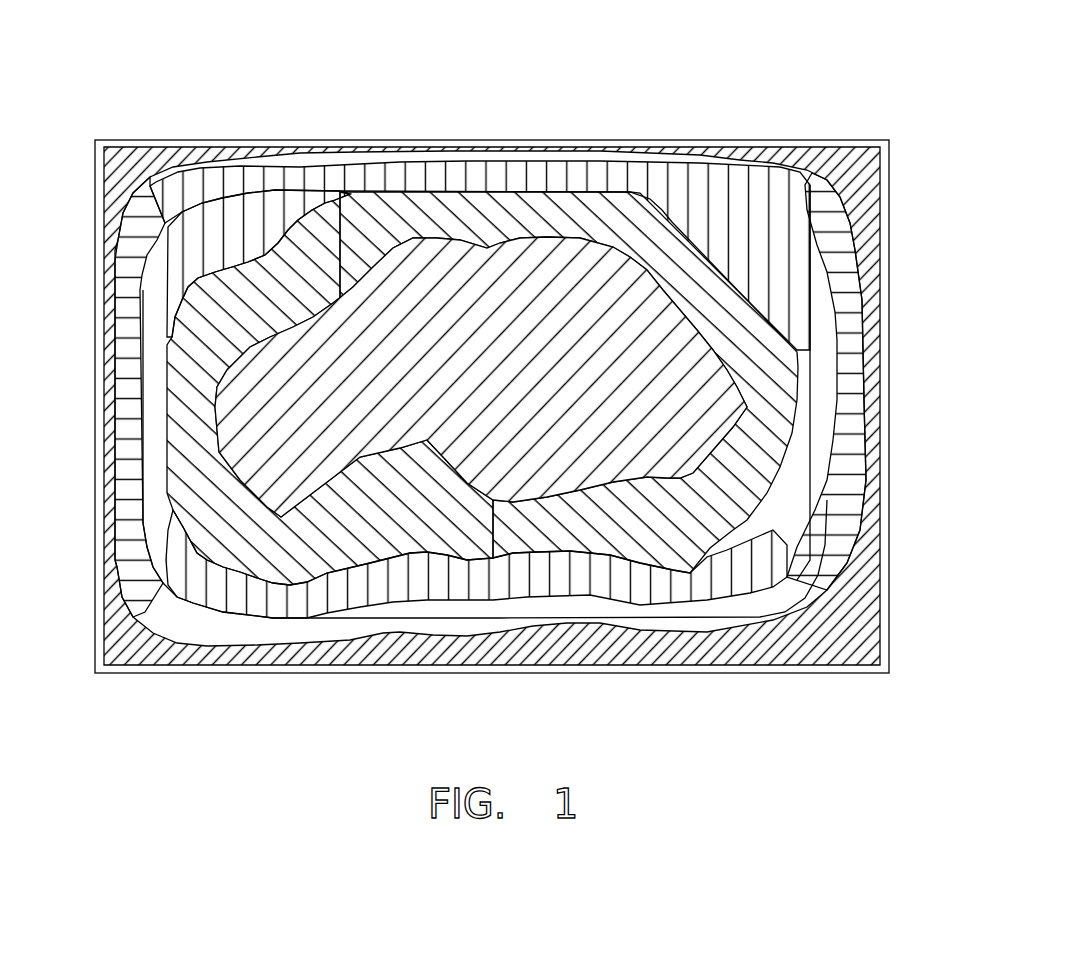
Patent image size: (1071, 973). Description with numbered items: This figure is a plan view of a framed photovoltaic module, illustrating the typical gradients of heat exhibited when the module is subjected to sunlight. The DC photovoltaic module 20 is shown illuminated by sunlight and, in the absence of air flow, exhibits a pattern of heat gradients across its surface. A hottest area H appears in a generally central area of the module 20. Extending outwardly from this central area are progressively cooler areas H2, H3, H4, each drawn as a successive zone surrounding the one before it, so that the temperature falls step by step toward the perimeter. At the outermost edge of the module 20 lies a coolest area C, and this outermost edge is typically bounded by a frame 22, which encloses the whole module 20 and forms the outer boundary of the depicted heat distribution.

The DC photovoltaic module 20 is at (497, 378).
The frame 22 is at (97, 528).
The hottest area H is at (516, 272).
The progressively cooler area H2 is at (676, 255).
The progressively cooler area H3 is at (738, 205).
The progressively cooler area H4 is at (850, 405).
The coolest area C is at (847, 643).